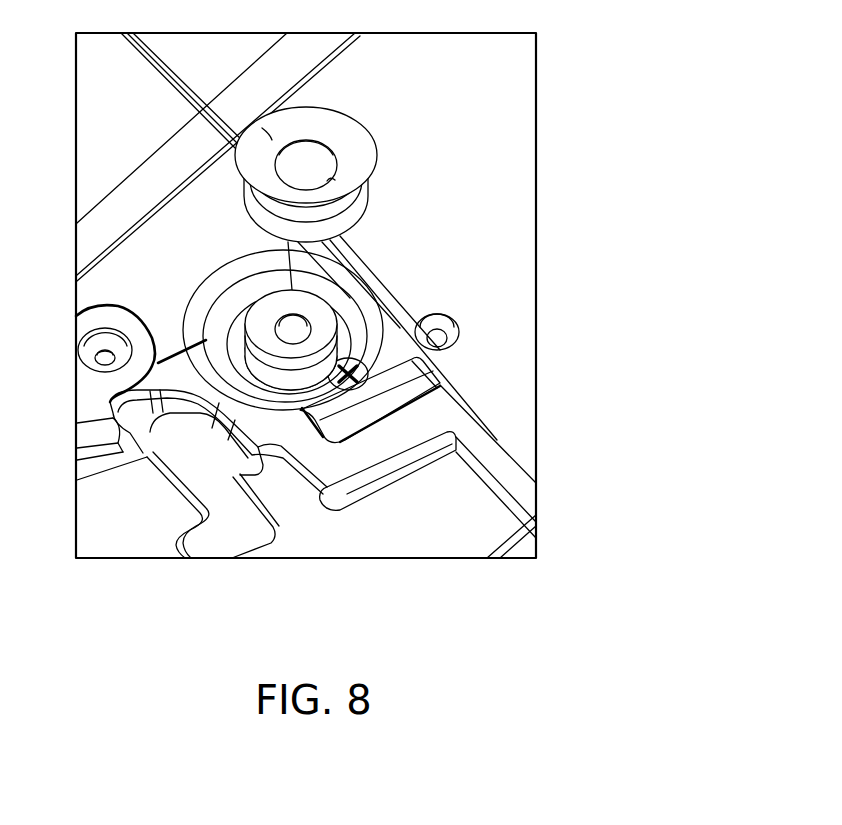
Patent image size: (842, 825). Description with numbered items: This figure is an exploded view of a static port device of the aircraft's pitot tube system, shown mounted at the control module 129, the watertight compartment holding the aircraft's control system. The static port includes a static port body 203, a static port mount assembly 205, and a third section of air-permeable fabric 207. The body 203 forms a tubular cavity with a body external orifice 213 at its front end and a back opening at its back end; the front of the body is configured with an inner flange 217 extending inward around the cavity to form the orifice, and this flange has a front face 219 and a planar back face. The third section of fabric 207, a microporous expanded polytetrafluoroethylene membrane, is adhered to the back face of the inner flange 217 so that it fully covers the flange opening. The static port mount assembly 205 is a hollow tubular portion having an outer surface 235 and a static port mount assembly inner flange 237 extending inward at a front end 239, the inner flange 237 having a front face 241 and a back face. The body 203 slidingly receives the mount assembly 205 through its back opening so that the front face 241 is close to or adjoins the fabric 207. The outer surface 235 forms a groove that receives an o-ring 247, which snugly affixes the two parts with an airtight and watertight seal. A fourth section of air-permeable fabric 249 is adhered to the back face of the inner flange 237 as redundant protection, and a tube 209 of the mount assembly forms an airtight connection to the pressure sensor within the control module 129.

The control module 129 is at (527, 207).
The static port body 203 is at (333, 108).
The static port mount assembly 205 is at (325, 313).
The third section of air-permeable fabric 207 is at (293, 177).
The tube 209 is at (373, 330).
The body external orifice 213 is at (327, 181).
The inner flange 217 is at (340, 172).
The front face 219 is at (270, 137).
The outer surface 235 is at (307, 385).
The static port mount assembly inner flange 237 is at (335, 327).
The front end 239 is at (305, 303).
The front face 241 is at (253, 300).
The o-ring 247 is at (262, 378).
The fourth section of air-permeable fabric 249 is at (283, 330).